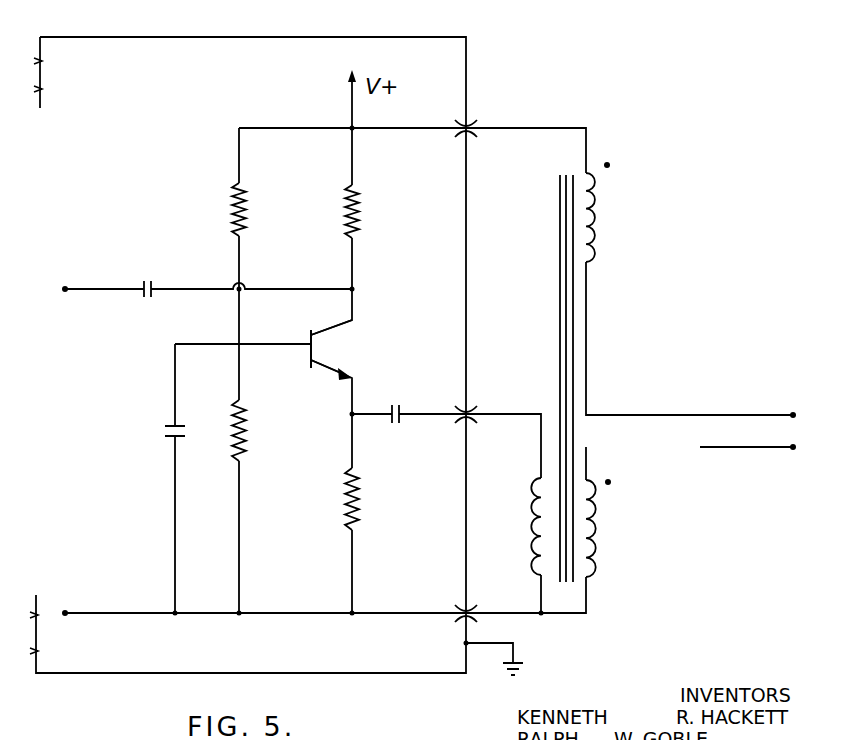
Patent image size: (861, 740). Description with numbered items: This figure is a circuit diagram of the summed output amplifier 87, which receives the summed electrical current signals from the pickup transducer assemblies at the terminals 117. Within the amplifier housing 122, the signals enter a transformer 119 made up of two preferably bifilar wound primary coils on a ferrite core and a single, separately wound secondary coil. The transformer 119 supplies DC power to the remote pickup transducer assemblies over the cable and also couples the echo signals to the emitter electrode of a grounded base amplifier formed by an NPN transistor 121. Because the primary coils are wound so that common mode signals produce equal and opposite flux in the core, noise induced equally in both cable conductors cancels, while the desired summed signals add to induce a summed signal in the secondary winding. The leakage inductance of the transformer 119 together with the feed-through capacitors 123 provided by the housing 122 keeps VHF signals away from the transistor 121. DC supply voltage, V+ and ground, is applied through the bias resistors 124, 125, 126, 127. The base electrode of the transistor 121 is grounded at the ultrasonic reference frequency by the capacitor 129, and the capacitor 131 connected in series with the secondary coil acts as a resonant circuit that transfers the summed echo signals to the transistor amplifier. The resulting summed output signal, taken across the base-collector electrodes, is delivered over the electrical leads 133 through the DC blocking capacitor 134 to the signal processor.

The summed output amplifier 87 is at (676, 134).
The terminals 117 is at (795, 417).
The transformer 119 is at (619, 336).
The NPN transistor 121 is at (318, 341).
The amplifier housing 122 is at (246, 36).
The feed-through capacitors 123 is at (470, 124).
The bias resistor 124 is at (358, 228).
The bias resistor 125 is at (244, 184).
The bias resistor 126 is at (248, 426).
The bias resistor 127 is at (346, 499).
The capacitor 129 is at (172, 427).
The capacitor 131 is at (386, 406).
The electrical leads 133 is at (96, 292).
The DC blocking capacitor 134 is at (143, 285).